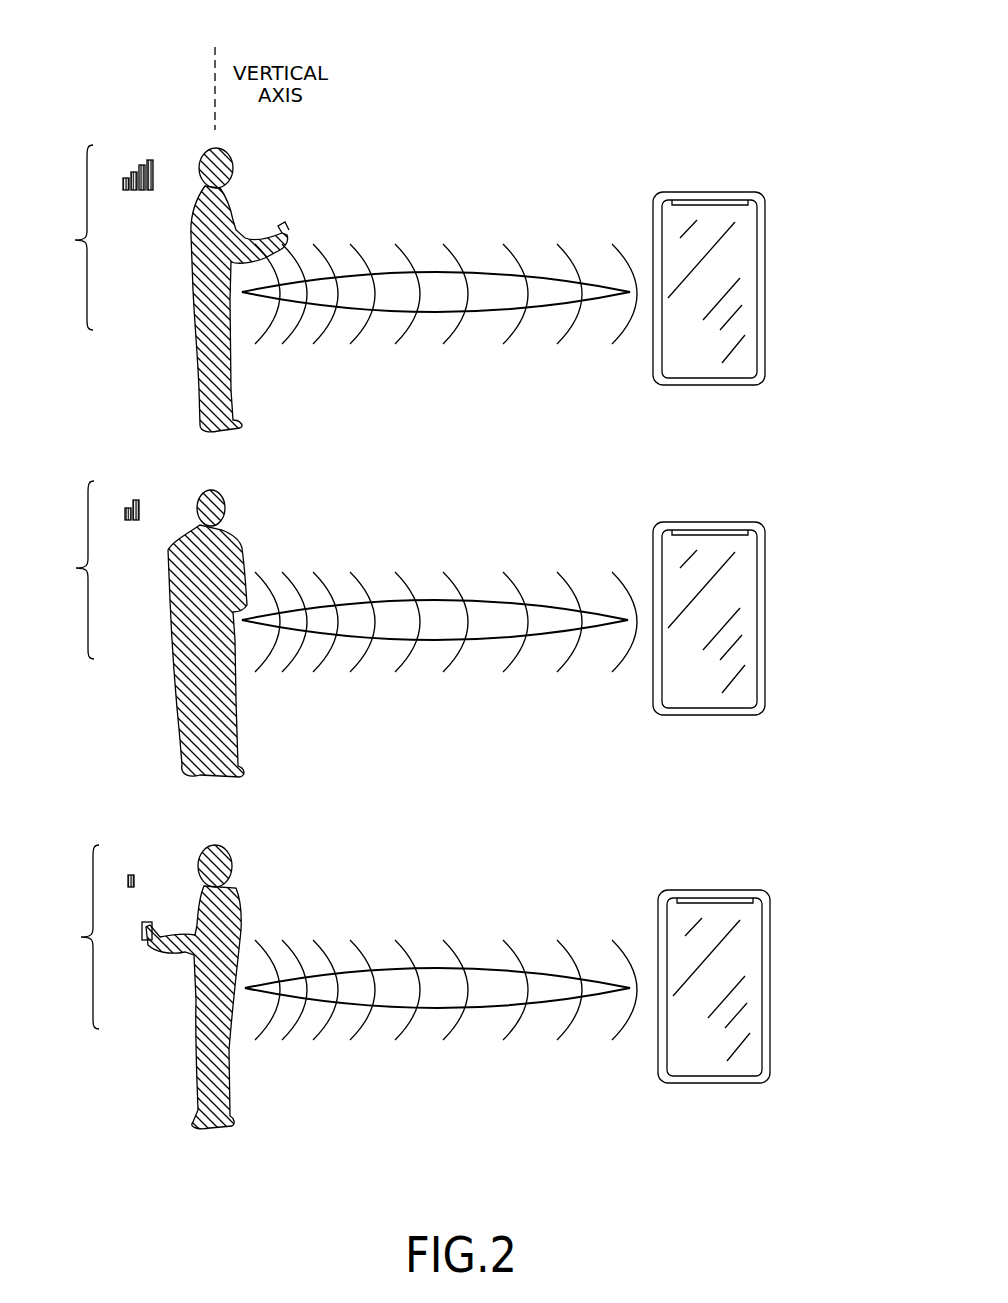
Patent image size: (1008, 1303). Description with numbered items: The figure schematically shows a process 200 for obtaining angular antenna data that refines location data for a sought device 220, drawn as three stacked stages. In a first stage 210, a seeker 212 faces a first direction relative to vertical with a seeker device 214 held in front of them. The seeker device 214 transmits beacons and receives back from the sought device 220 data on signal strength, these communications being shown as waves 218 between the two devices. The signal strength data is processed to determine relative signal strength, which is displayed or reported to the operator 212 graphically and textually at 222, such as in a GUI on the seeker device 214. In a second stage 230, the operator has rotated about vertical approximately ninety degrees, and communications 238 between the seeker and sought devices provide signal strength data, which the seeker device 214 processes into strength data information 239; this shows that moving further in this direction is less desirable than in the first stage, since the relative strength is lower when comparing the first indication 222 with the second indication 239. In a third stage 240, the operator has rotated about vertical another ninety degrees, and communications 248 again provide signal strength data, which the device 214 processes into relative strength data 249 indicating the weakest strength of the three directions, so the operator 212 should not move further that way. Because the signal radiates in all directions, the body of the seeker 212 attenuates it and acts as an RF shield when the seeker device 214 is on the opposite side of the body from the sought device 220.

The process 200 is at (738, 76).
The first stage 210 is at (790, 288).
The seeker 212 is at (198, 338).
The seeker device 214 is at (286, 230).
The waves 218 is at (402, 313).
The sought device 220 is at (716, 192).
The relative signal strength display 222 is at (100, 237).
The second stage 230 is at (790, 617).
The communications 238 is at (428, 643).
The strength data information 239 is at (89, 570).
The third stage 240 is at (792, 984).
The communications 248 is at (427, 1010).
The relative strength data 249 is at (93, 937).